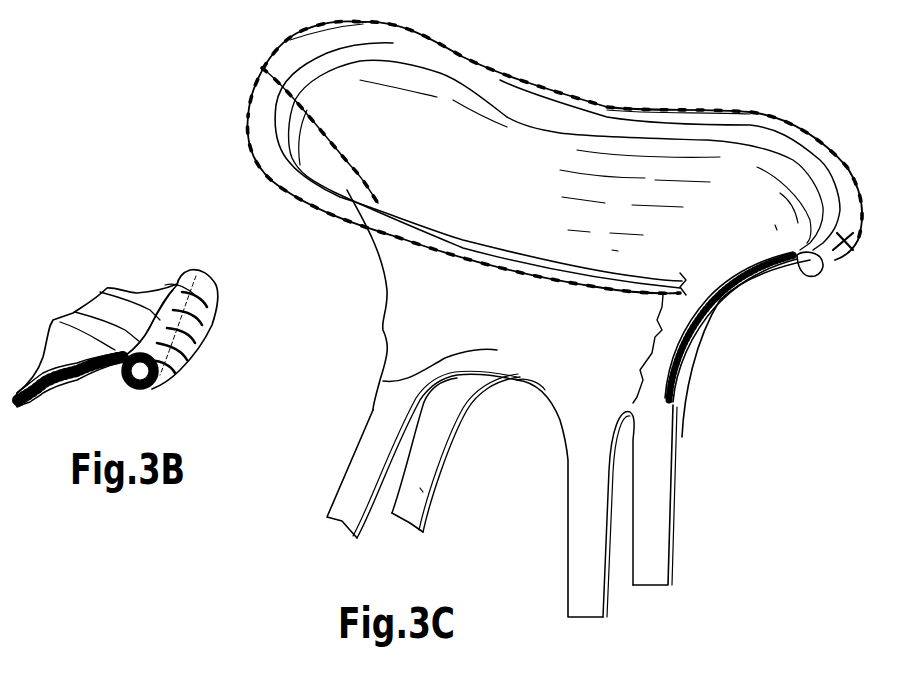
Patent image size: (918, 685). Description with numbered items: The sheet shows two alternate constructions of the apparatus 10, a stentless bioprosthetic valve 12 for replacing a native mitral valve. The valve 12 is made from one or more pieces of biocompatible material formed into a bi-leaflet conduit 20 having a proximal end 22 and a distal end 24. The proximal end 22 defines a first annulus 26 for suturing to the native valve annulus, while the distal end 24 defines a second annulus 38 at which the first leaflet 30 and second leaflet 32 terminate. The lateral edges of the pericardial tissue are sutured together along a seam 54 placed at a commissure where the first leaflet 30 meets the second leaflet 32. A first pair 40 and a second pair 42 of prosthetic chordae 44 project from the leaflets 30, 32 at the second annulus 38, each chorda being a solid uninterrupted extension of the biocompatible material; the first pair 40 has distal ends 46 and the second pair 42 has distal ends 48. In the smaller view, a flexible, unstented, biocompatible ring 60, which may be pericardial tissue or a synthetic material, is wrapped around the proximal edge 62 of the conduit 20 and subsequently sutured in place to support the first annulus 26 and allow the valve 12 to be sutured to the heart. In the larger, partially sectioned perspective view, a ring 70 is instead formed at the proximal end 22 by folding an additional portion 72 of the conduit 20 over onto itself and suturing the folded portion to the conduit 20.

In FIG. 3C, the apparatus 10 is at (554, 152).
In FIG. 3B, the stentless bioprosthetic valve 12 is at (197, 380).
In FIG. 3C, the stentless bioprosthetic valve 12 is at (740, 80).
In FIG. 3C, the bi-leaflet conduit 20 is at (710, 240).
In FIG. 3C, the proximal end 22 is at (493, 63).
In FIG. 3B, the distal end 24 is at (167, 280).
In FIG. 3C, the distal end 24 is at (518, 380).
In FIG. 3C, the first annulus 26 is at (623, 110).
In FIG. 3C, the first leaflet 30 is at (384, 381).
In FIG. 3C, the second leaflet 32 is at (660, 350).
In FIG. 3C, the second annulus 38 is at (655, 385).
In FIG. 3C, the first pair of prosthetic chordae 40 is at (360, 500).
In FIG. 3C, the second pair of prosthetic chordae 42 is at (420, 485).
In FIG. 3C, the prosthetic chordae 44 is at (372, 450).
In FIG. 3C, the distal end 46 is at (340, 520).
In FIG. 3C, the distal end 48 is at (400, 497).
In FIG. 3C, the seam 54 is at (262, 68).
In FIG. 3B, the ring 60 is at (200, 357).
In FIG. 3B, the proximal edge 62 is at (127, 387).
In FIG. 3C, the ring 70 is at (857, 247).
In FIG. 3C, the additional portion 72 is at (800, 276).